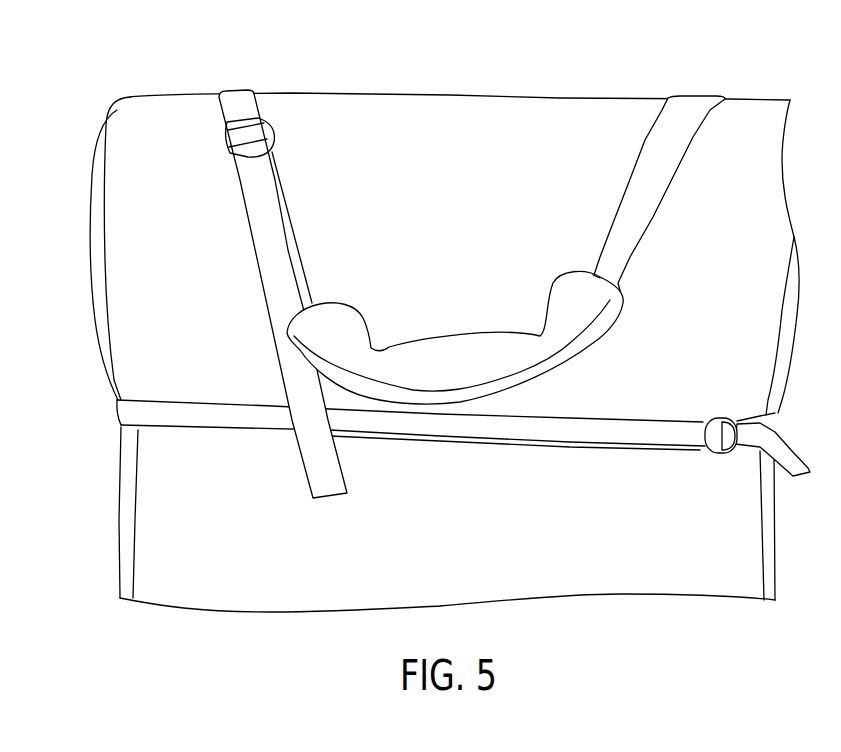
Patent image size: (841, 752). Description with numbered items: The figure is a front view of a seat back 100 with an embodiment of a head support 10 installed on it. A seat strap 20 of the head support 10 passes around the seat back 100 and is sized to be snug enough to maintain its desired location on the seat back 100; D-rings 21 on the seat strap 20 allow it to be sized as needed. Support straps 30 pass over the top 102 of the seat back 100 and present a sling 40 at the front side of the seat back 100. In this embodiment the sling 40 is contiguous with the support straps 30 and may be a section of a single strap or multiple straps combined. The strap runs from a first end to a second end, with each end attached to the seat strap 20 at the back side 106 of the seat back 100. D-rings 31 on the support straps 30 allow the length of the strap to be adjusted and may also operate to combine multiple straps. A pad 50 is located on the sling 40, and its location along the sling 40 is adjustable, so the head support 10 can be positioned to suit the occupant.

The head support 10 is at (339, 268).
The seat strap 20 is at (120, 413).
The D-rings 21 is at (718, 456).
The support straps 30 is at (233, 98).
The D-rings 31 is at (227, 148).
The sling 40 is at (600, 278).
The pad 50 is at (453, 338).
The seat back 100 is at (143, 575).
The top 102 is at (162, 95).
The back side 106 is at (461, 526).